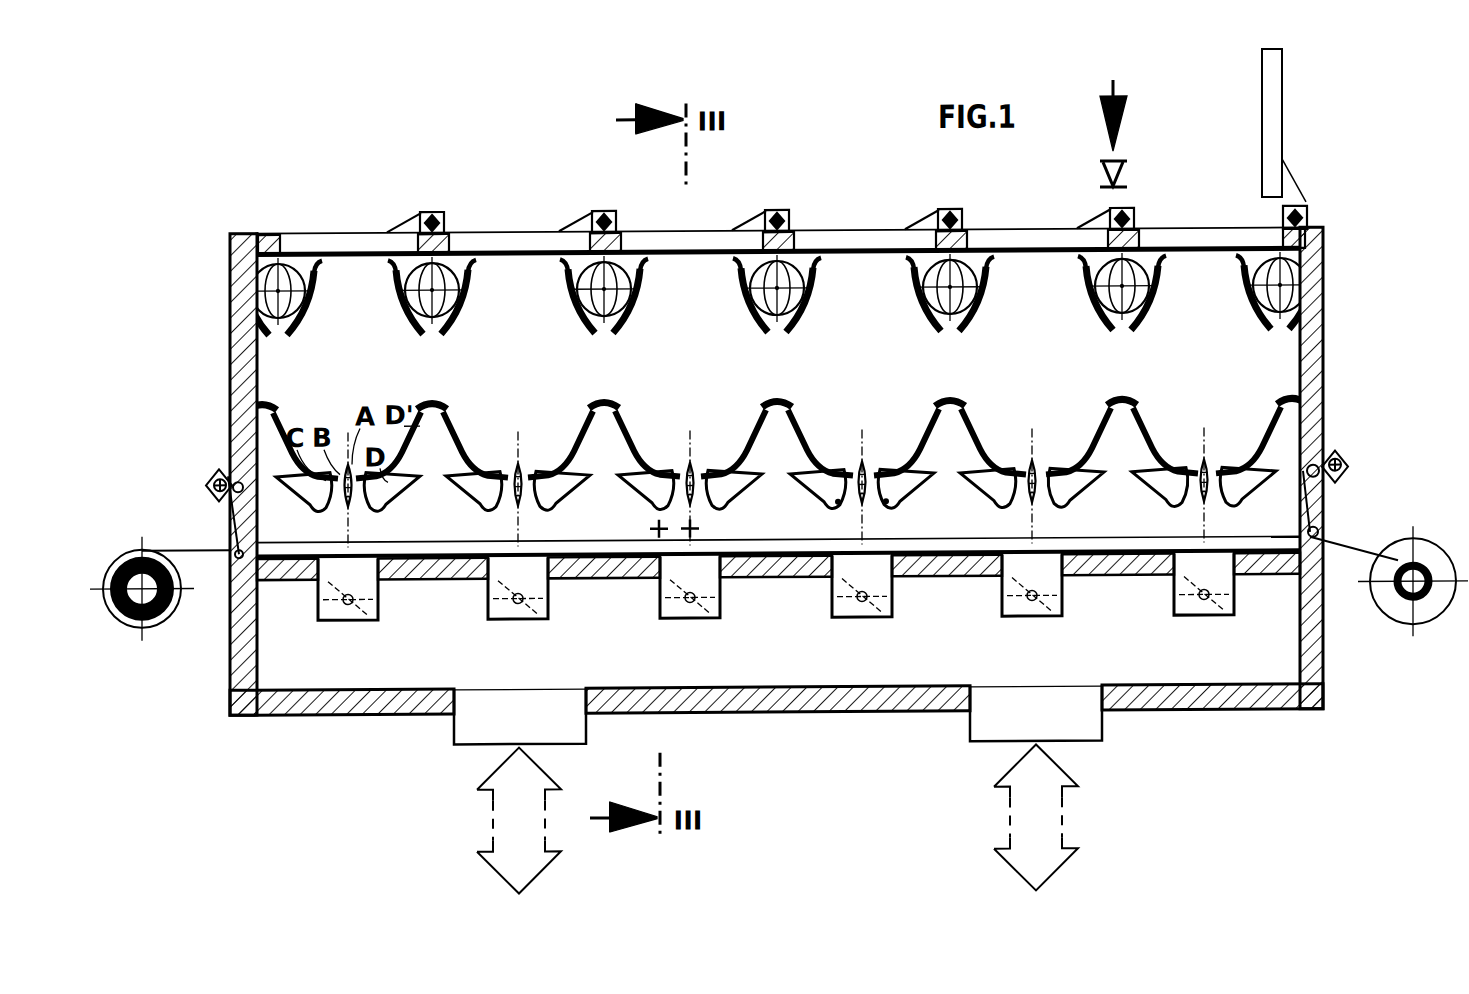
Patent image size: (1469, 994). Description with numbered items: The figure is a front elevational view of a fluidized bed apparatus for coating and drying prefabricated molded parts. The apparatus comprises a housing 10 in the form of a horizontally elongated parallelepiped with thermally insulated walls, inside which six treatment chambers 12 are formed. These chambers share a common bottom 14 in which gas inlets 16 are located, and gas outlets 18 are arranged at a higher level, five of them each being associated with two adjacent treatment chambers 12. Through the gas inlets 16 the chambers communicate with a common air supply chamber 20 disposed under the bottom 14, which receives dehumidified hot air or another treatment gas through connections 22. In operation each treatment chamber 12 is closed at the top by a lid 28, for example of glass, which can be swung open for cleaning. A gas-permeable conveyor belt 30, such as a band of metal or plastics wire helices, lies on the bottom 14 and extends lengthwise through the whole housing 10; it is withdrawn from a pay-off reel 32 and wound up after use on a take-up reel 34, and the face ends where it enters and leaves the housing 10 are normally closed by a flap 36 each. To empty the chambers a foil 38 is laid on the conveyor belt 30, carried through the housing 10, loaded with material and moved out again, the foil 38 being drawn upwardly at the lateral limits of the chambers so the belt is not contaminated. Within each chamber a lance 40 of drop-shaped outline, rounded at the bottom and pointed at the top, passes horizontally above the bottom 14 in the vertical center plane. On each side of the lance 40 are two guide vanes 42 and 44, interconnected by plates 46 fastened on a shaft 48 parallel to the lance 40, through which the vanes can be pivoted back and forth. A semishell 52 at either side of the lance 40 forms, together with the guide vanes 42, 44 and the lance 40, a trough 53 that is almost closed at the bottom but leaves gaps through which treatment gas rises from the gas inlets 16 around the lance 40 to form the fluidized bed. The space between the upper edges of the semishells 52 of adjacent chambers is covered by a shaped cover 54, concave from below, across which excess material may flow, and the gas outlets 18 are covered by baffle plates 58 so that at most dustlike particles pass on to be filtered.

The housing 10 is at (220, 292).
The treatment chambers 12 is at (517, 339).
The bottom 14 is at (436, 568).
The gas inlets 16 is at (505, 621).
The gas outlets 18 is at (420, 305).
The air supply chamber 20 is at (780, 655).
The connections 22 is at (1098, 736).
The lid 28 is at (320, 249).
The conveyor belt 30 is at (216, 556).
The pay-off reel 32 is at (162, 628).
The take-up reel 34 is at (1400, 612).
The flap 36 is at (1322, 512).
The foil 38 is at (1120, 511).
The lance 40 is at (696, 462).
The guide vane 42 is at (1046, 480).
The guide vane 44 is at (1000, 478).
The plates 46 is at (812, 490).
The shaft 48 is at (896, 499).
The semishell 52 is at (1101, 425).
The trough 53 is at (1017, 396).
The shaped cover 54 is at (1122, 396).
The baffle plates 58 is at (960, 317).